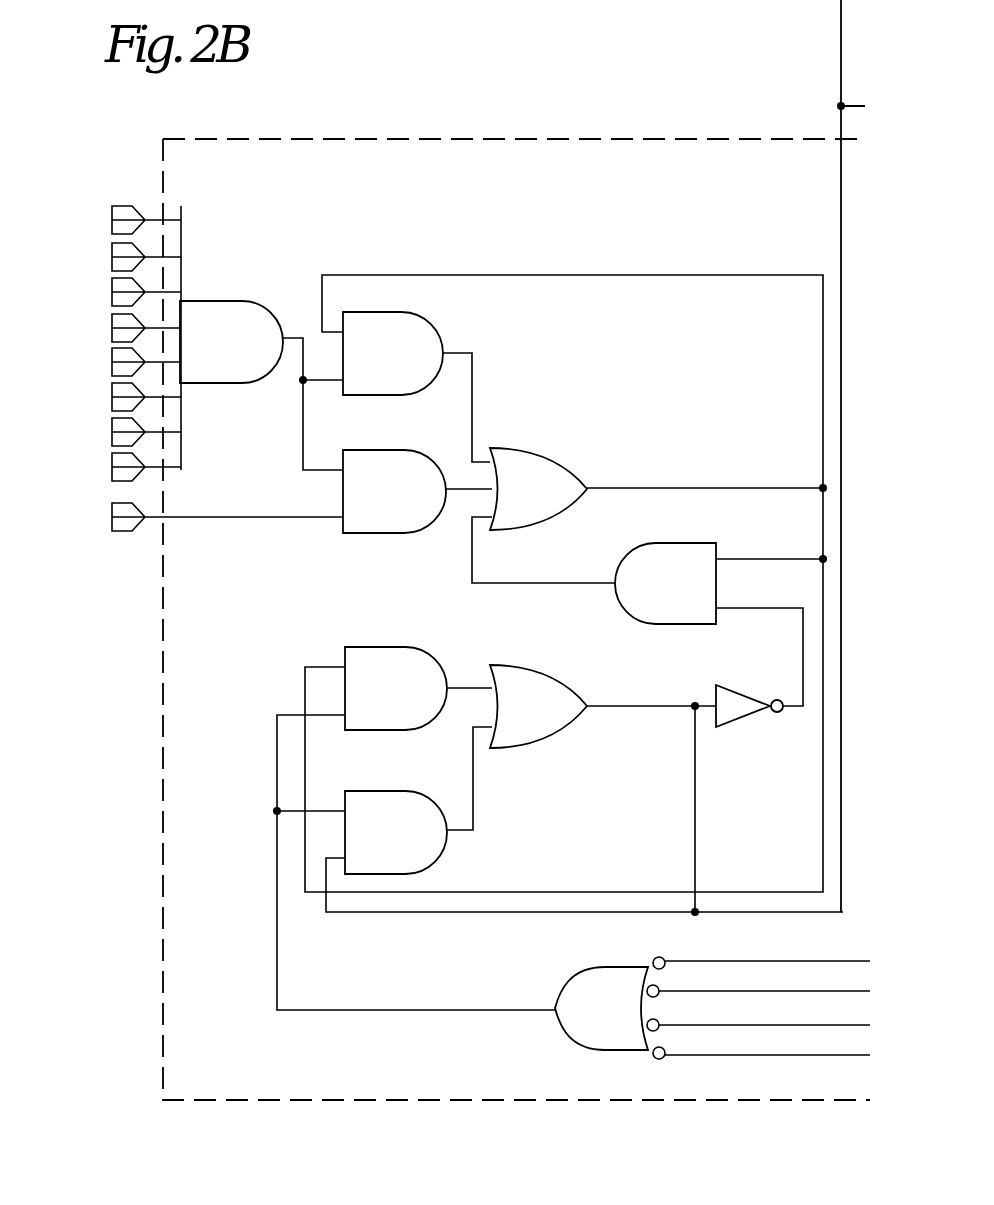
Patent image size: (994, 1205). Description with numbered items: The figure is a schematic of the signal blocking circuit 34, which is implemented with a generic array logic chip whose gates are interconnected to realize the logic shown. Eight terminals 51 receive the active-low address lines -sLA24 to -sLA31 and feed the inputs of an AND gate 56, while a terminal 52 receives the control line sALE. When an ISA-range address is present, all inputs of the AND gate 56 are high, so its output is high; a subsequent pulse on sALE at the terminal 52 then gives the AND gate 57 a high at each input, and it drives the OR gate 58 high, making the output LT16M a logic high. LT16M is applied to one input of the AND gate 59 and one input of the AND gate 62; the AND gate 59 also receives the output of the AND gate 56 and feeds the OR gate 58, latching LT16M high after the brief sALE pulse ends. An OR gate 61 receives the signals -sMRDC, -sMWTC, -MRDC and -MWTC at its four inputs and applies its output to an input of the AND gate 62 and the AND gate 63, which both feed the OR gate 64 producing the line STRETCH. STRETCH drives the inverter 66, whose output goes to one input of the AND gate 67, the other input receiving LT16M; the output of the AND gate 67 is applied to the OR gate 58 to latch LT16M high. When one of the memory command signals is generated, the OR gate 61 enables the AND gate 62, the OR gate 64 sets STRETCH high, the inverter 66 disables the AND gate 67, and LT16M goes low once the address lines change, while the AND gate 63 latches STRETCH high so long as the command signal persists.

The signal blocking circuit 34 is at (163, 755).
The terminals 51 is at (113, 185).
The terminal 52 is at (125, 531).
The AND gate 56 is at (265, 302).
The AND gate 57 is at (428, 451).
The OR gate 58 is at (565, 451).
The AND gate 59 is at (428, 313).
The OR gate 61 is at (574, 984).
The AND gate 62 is at (428, 648).
The AND gate 63 is at (428, 793).
The OR gate 64 is at (566, 667).
The inverter 66 is at (740, 686).
The AND gate 67 is at (632, 546).